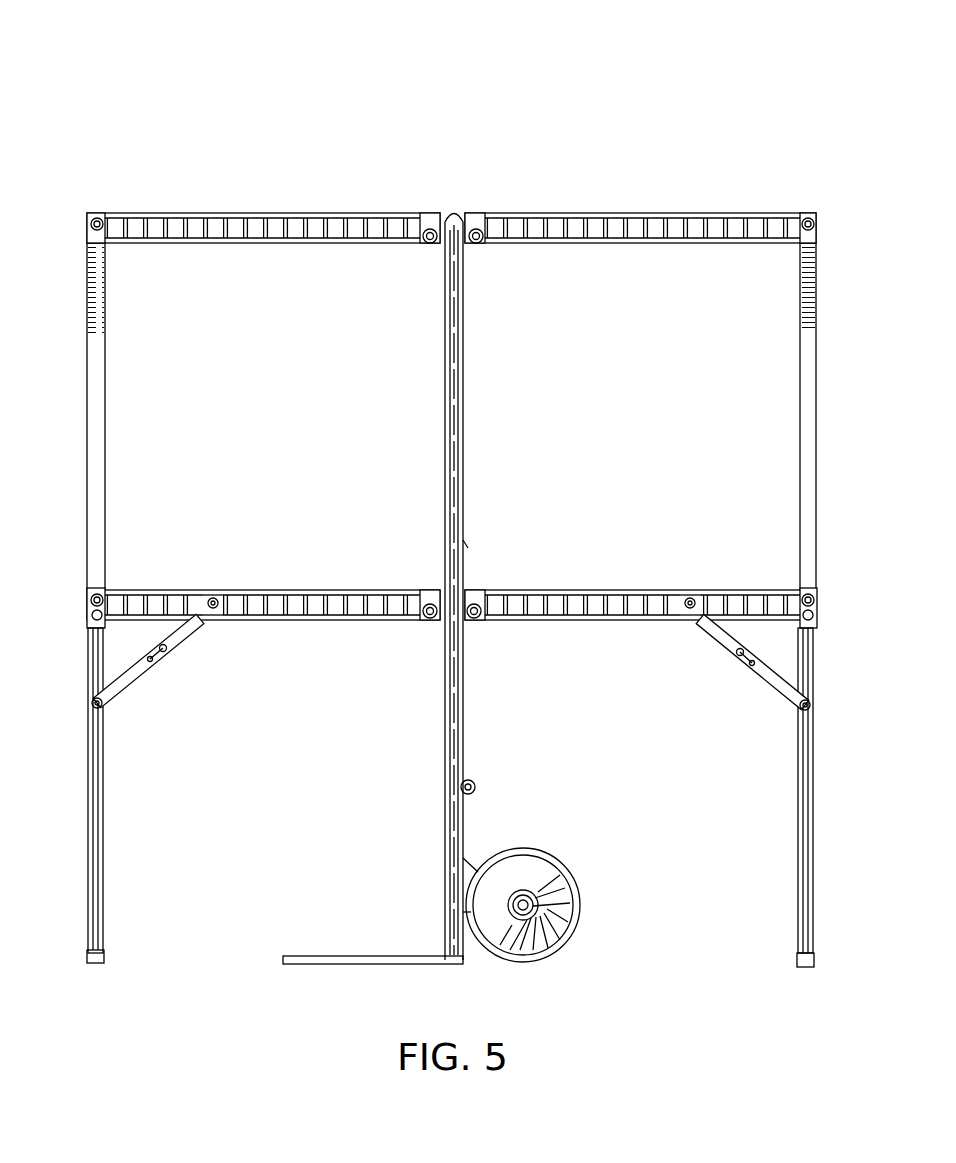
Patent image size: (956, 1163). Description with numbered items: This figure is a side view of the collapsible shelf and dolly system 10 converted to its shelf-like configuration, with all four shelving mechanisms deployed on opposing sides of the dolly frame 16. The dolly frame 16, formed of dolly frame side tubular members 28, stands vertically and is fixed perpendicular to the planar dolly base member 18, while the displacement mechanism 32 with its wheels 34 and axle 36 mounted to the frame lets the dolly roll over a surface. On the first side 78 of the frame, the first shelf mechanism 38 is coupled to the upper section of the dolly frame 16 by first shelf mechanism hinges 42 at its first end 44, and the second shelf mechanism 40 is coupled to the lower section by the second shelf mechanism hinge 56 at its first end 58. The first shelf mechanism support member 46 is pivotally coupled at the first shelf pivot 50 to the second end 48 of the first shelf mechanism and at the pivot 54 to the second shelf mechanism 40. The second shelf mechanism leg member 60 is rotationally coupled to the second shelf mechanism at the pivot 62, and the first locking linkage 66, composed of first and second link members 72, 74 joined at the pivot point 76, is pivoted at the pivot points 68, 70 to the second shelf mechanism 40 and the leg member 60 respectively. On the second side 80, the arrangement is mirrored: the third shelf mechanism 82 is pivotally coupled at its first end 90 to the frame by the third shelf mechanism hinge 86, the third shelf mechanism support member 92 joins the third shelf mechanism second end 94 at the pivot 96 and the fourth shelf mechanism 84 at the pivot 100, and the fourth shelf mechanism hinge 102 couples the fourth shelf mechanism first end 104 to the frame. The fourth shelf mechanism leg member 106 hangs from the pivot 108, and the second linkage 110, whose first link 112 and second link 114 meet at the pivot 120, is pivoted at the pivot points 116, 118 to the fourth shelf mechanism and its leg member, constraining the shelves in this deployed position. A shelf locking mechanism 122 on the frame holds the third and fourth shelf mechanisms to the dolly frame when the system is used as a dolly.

The collapsible shelf and dolly system 10 is at (563, 170).
The dolly frame 16 is at (451, 587).
The dolly base member 18 is at (372, 964).
The dolly frame side tubular member 28 is at (460, 500).
The displacement mechanism 32 is at (573, 893).
The wheel 34 is at (580, 927).
The axle 36 is at (536, 910).
The first shelf mechanism 38 is at (233, 211).
The second shelf mechanism 40 is at (259, 588).
The first shelf mechanism hinge 42 is at (430, 247).
The first end of first shelf mechanism 44 is at (401, 216).
The first shelf mechanism support member 46 is at (105, 388).
The second end of first shelf mechanism 48 is at (113, 213).
The first shelf pivot 50 is at (110, 178).
The pivot 54 is at (135, 552).
The second shelf mechanism hinge 56 is at (431, 622).
The first end of second shelf mechanism 58 is at (405, 597).
The second shelf mechanism leg member 60 is at (104, 820).
The pivot 62 is at (104, 614).
The first locking linkage 66 is at (179, 702).
The pivot point 68 is at (213, 598).
The pivot point 70 is at (101, 708).
The first link member 72 is at (152, 665).
The second link member 74 is at (197, 628).
The pivot point 76 is at (167, 650).
The first side of frame 78 is at (445, 405).
The second side of frame 80 is at (466, 542).
The third shelf mechanism 82 is at (656, 211).
The fourth shelf mechanism 84 is at (613, 588).
The third shelf mechanism hinge 86 is at (476, 247).
The third shelf mechanism first end 90 is at (510, 210).
The third shelf mechanism support member 92 is at (800, 330).
The third shelf mechanism second end 94 is at (803, 175).
The pivot 96 is at (810, 220).
The pivot 100 is at (771, 557).
The fourth shelf mechanism hinge 102 is at (475, 622).
The fourth shelf mechanism first end 104 is at (525, 606).
The fourth shelf mechanism leg member 106 is at (798, 838).
The pivot 108 is at (804, 612).
The second linkage 110 is at (706, 705).
The second linkage first link 112 is at (784, 693).
The second link 114 is at (714, 638).
The pivot point 116 is at (691, 598).
The pivot point 118 is at (800, 712).
The pivot 120 is at (738, 657).
The shelf locking mechanism 122 is at (476, 786).